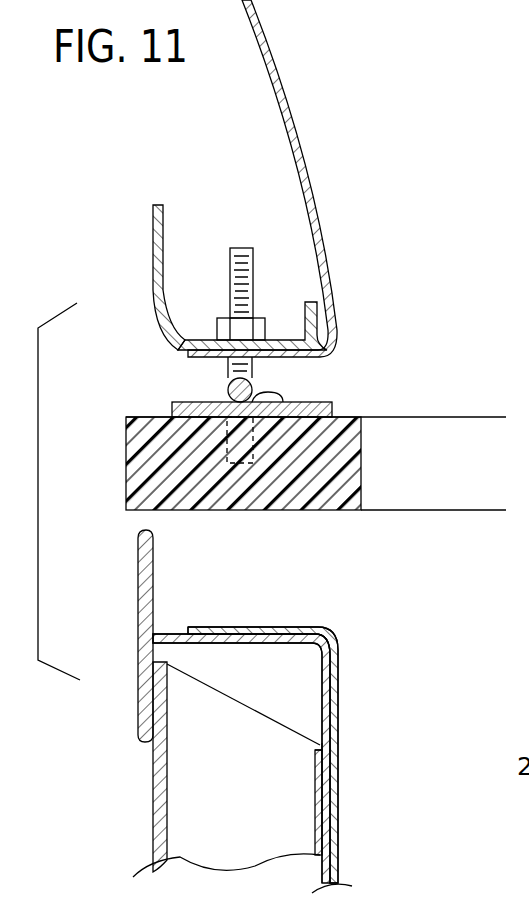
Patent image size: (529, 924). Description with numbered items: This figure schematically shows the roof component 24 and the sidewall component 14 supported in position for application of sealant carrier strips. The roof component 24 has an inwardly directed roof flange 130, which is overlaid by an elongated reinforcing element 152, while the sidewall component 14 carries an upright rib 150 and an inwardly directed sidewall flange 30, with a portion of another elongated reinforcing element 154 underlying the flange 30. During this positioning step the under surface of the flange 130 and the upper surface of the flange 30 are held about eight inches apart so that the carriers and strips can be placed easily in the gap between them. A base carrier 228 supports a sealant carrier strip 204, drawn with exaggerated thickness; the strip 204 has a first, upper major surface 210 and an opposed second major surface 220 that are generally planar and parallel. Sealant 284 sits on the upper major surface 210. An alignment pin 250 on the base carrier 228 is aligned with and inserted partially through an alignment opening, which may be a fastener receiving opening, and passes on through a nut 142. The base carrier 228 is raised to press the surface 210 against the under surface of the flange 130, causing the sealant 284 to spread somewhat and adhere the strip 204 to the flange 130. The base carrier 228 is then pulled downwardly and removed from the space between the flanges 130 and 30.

The roof component 24 is at (279, 71).
The alignment pin 250 is at (238, 248).
The nut 142 is at (218, 317).
The elongated reinforcing element 152 is at (152, 241).
The sealant 284 is at (229, 384).
The sealant carrier strip 204 is at (172, 409).
The inwardly directed roof flange 130 is at (290, 357).
The first major surface 210 is at (310, 402).
The second major surface 220 is at (300, 418).
The base carrier 228 is at (126, 456).
The elongated reinforcing element 154 is at (138, 642).
The inwardly directed sidewall flange 30 is at (275, 627).
The upright rib 150 is at (185, 789).
The sidewall component 14 is at (338, 803).